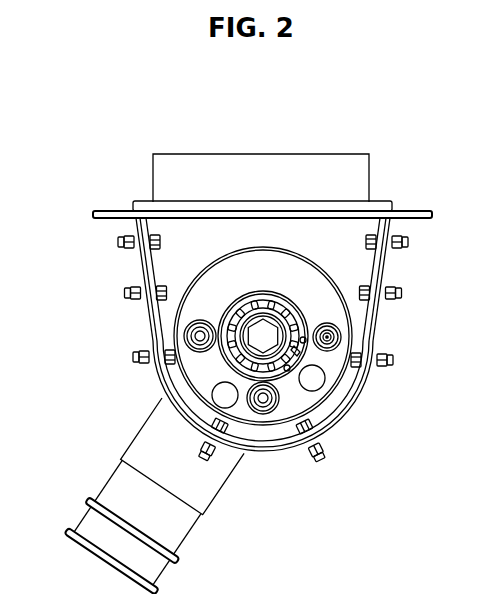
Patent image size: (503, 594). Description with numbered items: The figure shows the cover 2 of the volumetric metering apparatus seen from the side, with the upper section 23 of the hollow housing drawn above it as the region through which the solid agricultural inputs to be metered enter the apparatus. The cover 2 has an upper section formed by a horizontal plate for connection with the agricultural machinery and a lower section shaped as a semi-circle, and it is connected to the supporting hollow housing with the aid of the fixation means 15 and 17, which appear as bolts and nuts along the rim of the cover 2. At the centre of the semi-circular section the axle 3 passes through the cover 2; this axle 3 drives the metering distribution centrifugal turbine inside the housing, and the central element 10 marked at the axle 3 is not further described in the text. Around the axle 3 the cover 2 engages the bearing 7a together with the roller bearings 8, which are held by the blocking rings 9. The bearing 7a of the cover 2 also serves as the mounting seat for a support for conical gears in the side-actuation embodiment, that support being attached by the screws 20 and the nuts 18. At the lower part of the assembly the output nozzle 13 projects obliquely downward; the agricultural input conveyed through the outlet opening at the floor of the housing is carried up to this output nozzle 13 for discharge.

The cover 2 is at (347, 258).
The axle 3 is at (270, 352).
The bearing 7a is at (192, 316).
The roller bearings 8 is at (245, 363).
The blocking rings 9 is at (285, 372).
The drive shaft 10 is at (263, 336).
The output nozzle 13 is at (125, 495).
The fixation means 15 is at (115, 248).
The fixation means 17 is at (128, 238).
The nuts 18 is at (333, 325).
The screws 20 is at (340, 340).
The upper section 23 is at (262, 155).